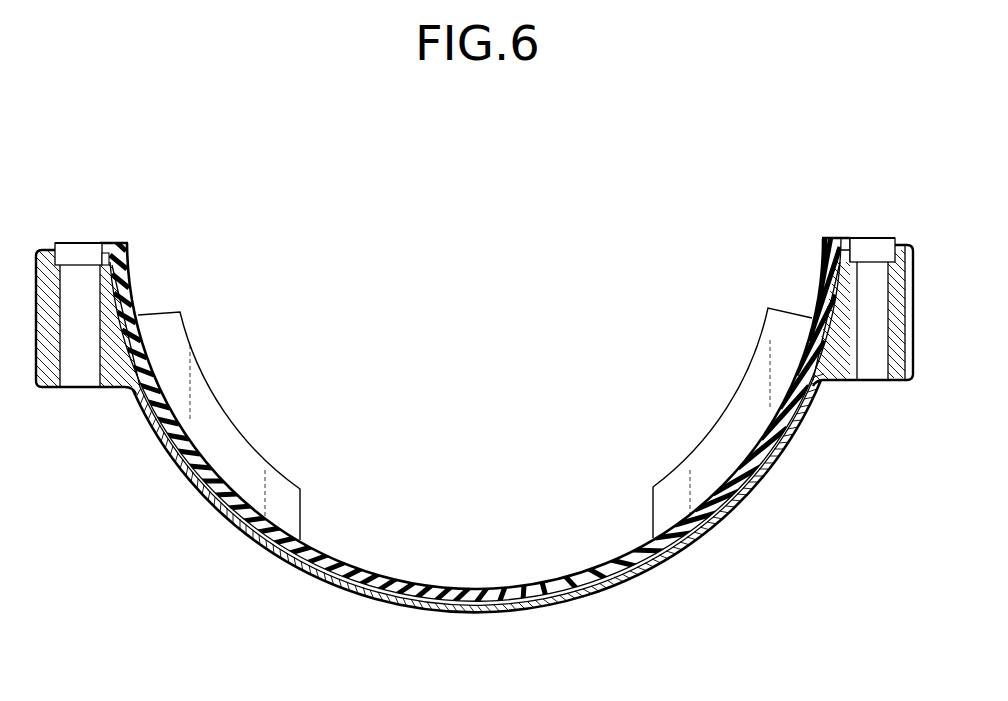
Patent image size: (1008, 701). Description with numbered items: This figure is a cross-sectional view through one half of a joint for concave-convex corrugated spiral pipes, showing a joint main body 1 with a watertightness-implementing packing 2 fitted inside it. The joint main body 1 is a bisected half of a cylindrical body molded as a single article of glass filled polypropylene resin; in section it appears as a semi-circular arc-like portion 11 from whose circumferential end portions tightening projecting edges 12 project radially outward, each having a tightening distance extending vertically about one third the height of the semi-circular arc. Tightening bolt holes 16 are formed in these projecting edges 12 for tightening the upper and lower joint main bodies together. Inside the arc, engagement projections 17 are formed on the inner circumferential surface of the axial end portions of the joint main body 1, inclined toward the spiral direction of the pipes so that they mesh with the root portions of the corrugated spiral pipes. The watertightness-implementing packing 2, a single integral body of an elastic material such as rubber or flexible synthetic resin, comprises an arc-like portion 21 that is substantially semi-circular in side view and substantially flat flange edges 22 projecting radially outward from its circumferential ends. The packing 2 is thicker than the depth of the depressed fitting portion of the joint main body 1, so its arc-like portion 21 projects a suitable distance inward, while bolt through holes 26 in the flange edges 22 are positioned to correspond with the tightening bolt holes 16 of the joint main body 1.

The joint main body 1 is at (478, 493).
The watertightness-implementing packing 2 is at (474, 378).
The semi-circular arc-like portion 11 is at (690, 548).
The tightening projecting edge 12 is at (837, 373).
The tightening bolt hole 16 is at (873, 370).
The engagement projection 17 is at (222, 426).
The arc-like portion 21 is at (468, 590).
The flange edge 22 is at (111, 242).
The bolt through hole 26 is at (872, 242).